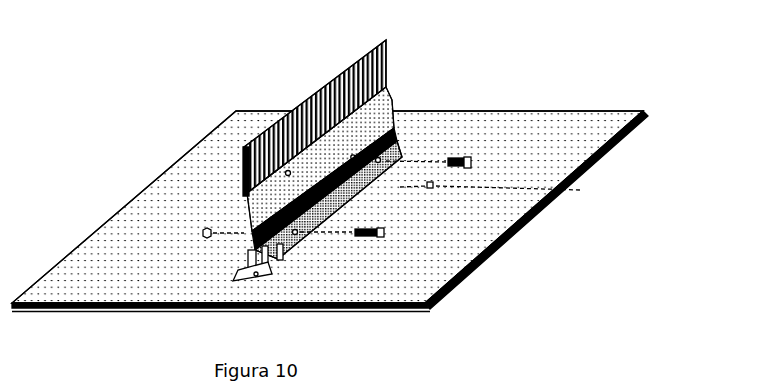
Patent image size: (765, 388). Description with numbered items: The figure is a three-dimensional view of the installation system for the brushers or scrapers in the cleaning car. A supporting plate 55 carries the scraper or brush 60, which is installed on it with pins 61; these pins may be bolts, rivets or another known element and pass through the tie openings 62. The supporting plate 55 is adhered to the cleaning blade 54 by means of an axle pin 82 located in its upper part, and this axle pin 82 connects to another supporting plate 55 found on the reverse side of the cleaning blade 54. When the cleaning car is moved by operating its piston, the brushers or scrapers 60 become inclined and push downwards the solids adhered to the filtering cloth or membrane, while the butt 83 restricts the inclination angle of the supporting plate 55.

The cleaning blade 54 is at (480, 255).
The supporting plate 55 is at (300, 254).
The scraper or brush 60 is at (243, 202).
The pin 61 is at (462, 156).
The tie opening 62 is at (388, 88).
The axle pin 82 is at (180, 306).
The butt 83 is at (556, 190).